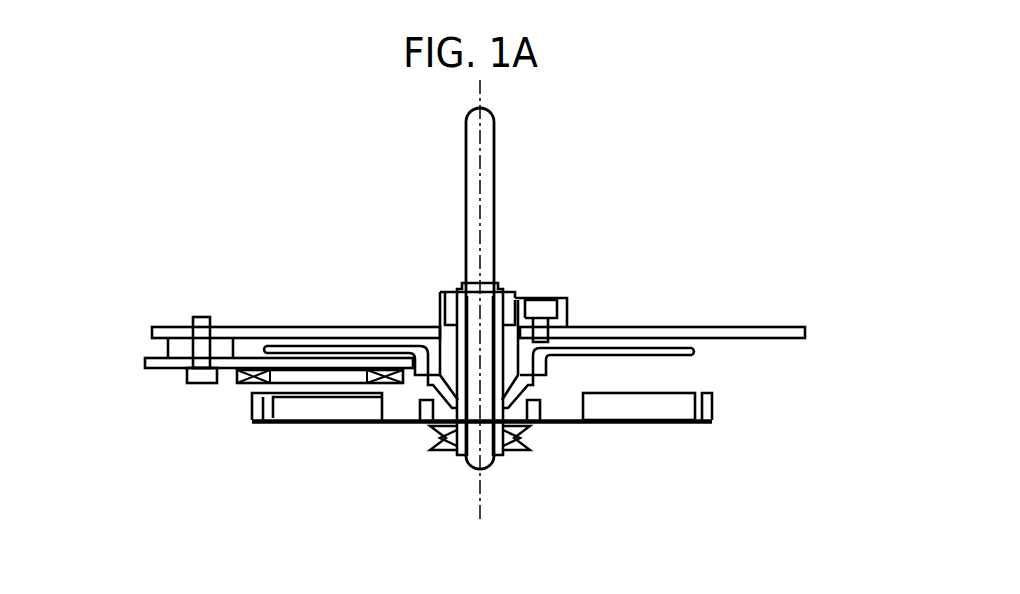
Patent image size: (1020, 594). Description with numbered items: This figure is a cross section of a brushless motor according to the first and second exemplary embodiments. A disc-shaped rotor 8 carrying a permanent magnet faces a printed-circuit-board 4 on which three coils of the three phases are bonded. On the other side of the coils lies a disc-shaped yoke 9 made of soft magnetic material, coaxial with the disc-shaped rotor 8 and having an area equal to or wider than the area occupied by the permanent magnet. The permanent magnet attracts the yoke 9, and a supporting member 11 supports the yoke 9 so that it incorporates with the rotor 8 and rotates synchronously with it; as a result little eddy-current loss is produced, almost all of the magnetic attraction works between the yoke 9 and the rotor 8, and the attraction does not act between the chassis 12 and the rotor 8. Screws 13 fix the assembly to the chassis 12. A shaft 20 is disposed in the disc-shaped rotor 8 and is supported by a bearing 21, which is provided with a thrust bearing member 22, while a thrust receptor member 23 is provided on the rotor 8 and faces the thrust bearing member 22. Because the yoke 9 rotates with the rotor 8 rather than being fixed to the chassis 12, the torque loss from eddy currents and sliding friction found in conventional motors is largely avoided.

The printed-circuit-board 4 is at (158, 363).
The disc-shaped rotor 8 is at (650, 405).
The disc-shaped yoke 9 is at (647, 355).
The supporting member 11 is at (535, 388).
The chassis 12 is at (278, 332).
The screws 13 is at (202, 348).
The shaft 20 is at (485, 187).
The bearing 21 is at (451, 348).
The thrust bearing member 22 is at (508, 294).
The thrust receptor member 23 is at (460, 283).